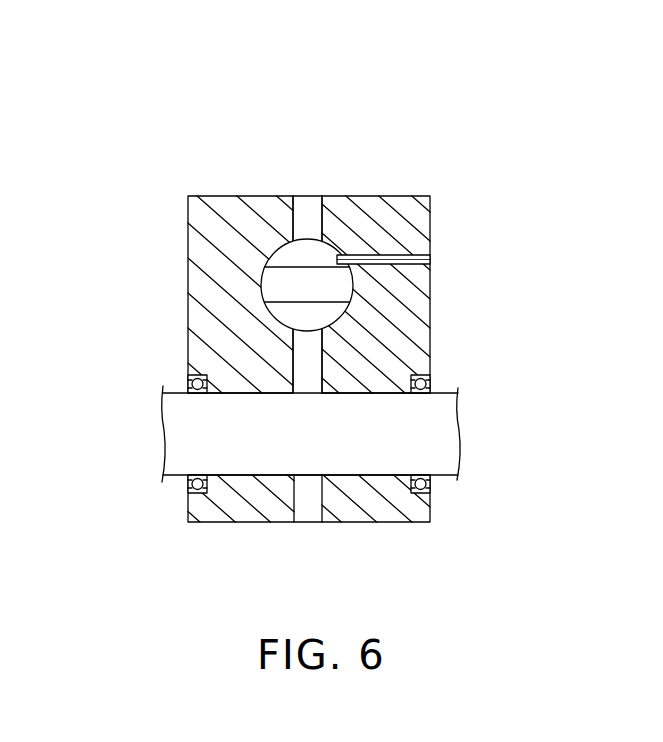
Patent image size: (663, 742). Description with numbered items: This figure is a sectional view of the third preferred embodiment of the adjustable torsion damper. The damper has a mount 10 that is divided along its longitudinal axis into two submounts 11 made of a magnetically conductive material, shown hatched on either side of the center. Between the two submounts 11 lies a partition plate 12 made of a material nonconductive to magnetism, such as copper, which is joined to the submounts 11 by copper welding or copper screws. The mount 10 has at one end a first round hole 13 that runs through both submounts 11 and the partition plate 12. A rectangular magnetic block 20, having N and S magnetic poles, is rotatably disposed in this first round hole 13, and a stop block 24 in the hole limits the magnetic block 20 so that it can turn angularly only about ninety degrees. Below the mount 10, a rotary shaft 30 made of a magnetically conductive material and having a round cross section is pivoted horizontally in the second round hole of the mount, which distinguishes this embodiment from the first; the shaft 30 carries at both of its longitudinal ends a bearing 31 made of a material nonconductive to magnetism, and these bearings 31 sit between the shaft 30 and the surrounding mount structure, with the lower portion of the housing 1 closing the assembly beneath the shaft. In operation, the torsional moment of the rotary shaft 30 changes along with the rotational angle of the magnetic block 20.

The housing base 1 is at (369, 478).
The mount 10 is at (343, 230).
The submounts 11 is at (232, 212).
The partition plate 12 is at (305, 207).
The first round hole 13 is at (333, 325).
The magnetic block 20 is at (322, 297).
The stop block 24 is at (400, 255).
The rotary shaft 30 is at (447, 462).
The bearing 31 is at (196, 375).